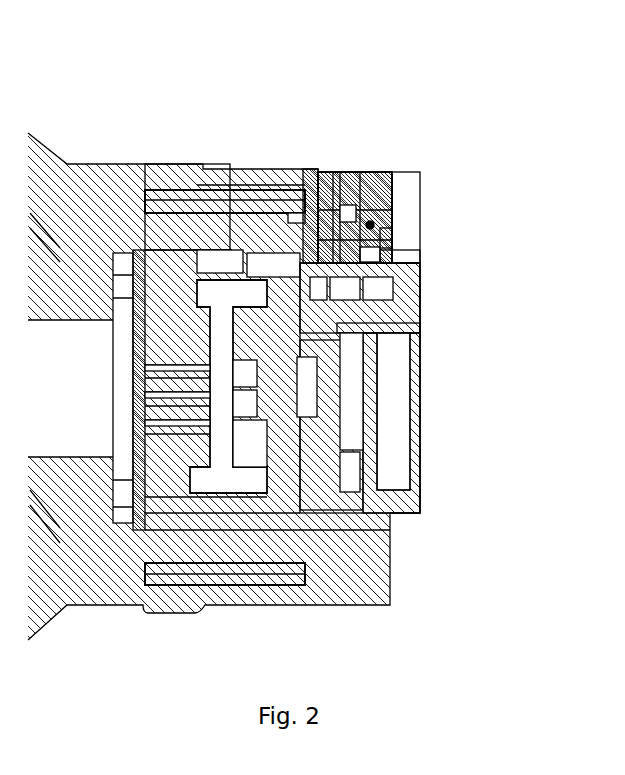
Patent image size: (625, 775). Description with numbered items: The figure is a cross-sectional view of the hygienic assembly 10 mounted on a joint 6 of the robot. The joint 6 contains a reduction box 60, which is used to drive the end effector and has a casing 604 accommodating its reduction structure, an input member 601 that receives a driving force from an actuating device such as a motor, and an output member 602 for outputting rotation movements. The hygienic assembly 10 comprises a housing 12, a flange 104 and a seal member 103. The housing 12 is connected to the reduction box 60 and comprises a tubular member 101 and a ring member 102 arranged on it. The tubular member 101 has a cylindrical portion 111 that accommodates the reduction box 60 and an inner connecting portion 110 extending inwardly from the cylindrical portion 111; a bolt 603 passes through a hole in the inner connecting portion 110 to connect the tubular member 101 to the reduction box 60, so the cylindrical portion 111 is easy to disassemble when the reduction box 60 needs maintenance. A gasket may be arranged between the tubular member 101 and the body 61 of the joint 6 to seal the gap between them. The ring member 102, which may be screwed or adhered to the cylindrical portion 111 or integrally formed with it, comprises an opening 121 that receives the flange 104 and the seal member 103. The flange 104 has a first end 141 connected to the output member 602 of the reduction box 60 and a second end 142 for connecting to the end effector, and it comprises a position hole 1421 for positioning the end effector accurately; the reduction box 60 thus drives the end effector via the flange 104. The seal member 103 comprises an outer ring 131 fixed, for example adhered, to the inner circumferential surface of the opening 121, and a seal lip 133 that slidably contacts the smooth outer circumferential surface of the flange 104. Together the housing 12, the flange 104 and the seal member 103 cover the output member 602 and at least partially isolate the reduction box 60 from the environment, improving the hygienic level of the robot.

The joint 6 is at (72, 62).
The body 61 is at (86, 216).
The reduction box 60 is at (132, 336).
The input member 601 is at (125, 387).
The casing 604 is at (210, 245).
The bolt 603 is at (247, 207).
The inner connecting portion 110 is at (296, 213).
The cylindrical portion 111 is at (316, 180).
The hygienic assembly 10 is at (482, 140).
The housing 12 is at (390, 123).
The tubular member 101 is at (359, 169).
The ring member 102 is at (399, 192).
The seal member 103 is at (446, 232).
The opening 121 is at (374, 224).
The outer ring 131 is at (392, 237).
The seal lip 133 is at (398, 260).
The flange 104 is at (427, 283).
The first end 141 is at (357, 330).
The second end 142 is at (420, 447).
The position hole 1421 is at (400, 390).
The output member 602 is at (335, 482).